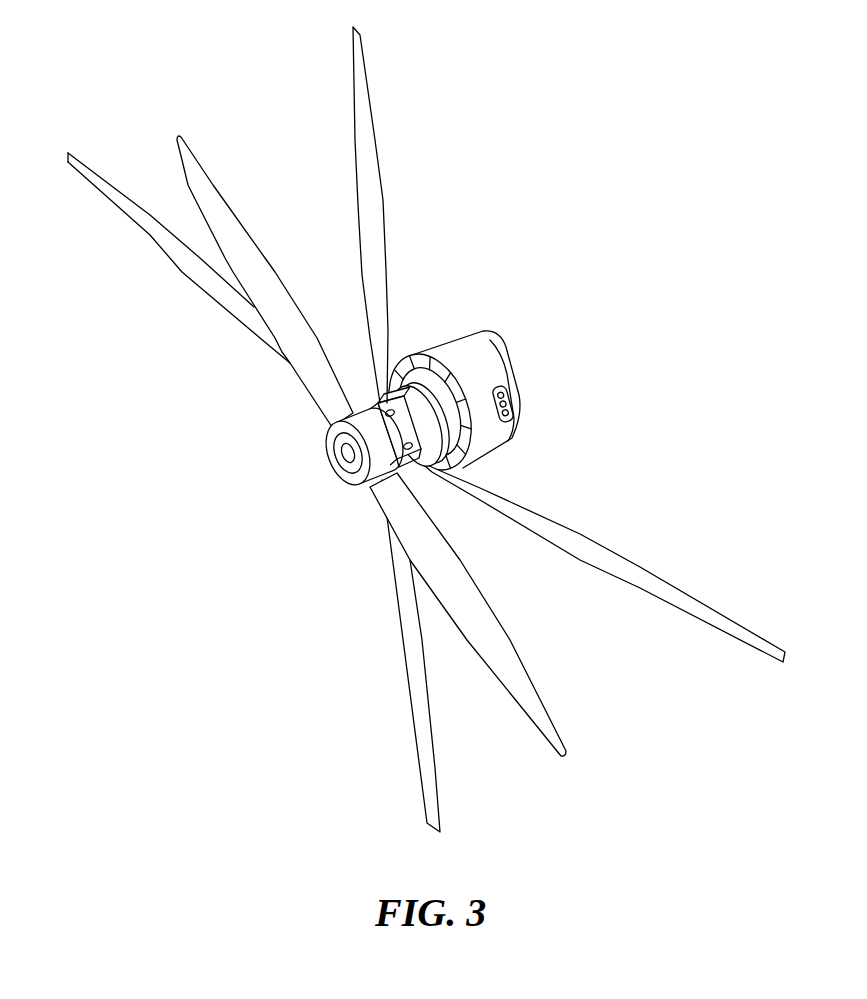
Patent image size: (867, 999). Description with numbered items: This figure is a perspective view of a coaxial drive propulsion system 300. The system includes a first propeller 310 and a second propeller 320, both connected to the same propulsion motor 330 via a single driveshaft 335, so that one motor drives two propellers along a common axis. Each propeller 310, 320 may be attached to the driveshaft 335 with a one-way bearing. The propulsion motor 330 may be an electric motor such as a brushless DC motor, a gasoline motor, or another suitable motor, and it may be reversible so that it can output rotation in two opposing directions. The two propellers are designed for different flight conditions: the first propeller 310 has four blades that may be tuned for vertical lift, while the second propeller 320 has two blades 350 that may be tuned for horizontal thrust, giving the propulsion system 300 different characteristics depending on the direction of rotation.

The coaxial drive propulsion system 300 is at (422, 429).
The first propeller 310 is at (375, 392).
The second propeller 320 is at (368, 490).
The propulsion motor 330 is at (445, 340).
The driveshaft 335 is at (332, 458).
The blade 350 is at (210, 180).